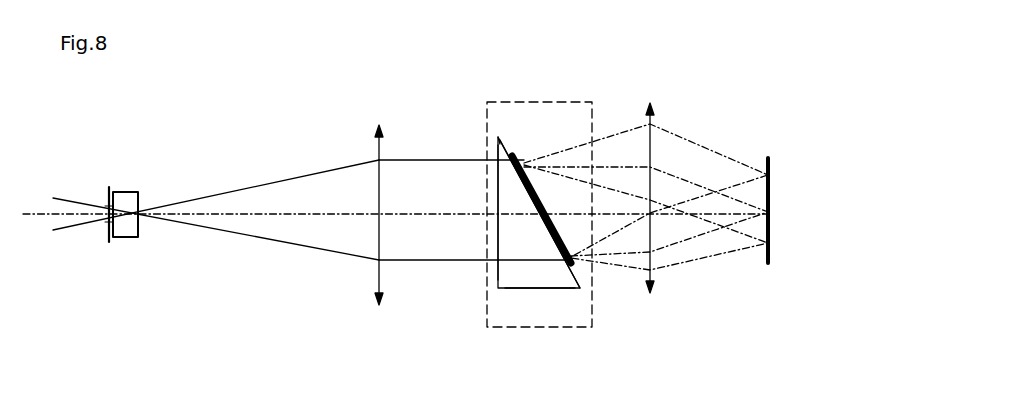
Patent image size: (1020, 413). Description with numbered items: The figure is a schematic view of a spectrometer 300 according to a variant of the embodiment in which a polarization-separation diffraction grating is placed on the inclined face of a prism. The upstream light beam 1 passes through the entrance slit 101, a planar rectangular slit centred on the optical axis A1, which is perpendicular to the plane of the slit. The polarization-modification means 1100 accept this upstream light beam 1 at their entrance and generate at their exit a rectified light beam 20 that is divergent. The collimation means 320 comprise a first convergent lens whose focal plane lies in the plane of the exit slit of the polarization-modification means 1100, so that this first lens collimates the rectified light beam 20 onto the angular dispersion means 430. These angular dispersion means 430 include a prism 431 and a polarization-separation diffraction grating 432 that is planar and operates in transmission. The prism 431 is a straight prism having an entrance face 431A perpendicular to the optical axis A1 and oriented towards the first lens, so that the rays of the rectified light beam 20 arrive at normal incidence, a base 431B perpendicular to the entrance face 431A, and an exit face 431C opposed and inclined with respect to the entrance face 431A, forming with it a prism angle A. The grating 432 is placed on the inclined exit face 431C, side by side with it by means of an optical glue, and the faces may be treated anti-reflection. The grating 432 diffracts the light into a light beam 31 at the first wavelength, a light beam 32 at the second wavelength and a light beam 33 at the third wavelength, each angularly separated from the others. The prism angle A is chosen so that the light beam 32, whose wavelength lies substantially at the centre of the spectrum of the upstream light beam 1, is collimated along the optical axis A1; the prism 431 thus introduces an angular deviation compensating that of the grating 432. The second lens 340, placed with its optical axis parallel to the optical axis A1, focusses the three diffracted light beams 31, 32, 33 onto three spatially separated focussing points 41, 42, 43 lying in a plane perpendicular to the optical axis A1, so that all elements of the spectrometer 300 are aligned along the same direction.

The upstream light beam 1 is at (68, 206).
The entrance slit 101 is at (109, 243).
The polarization-modification means 1100 is at (125, 192).
The optical axis A1 is at (33, 212).
The rectified light beam 20 is at (275, 233).
The spectrometer 300 is at (235, 128).
The collimation means 320 is at (372, 277).
The second lens 340 is at (652, 108).
The angular dispersion means 430 is at (510, 336).
The prism 431 is at (507, 268).
The entrance face 431A is at (497, 185).
The base 431B is at (528, 290).
The exit face 431C is at (580, 277).
The polarization-separation diffraction grating 432 is at (522, 158).
The prism angle A is at (497, 173).
The light beam diffracted at wavelength λ1 31 is at (610, 233).
The light beam diffracted at wavelength λ2 32 is at (696, 238).
The light beam diffracted at wavelength λ3 33 is at (679, 208).
The focussing point 41 is at (782, 176).
The focussing point 42 is at (774, 212).
The focussing point 43 is at (773, 252).